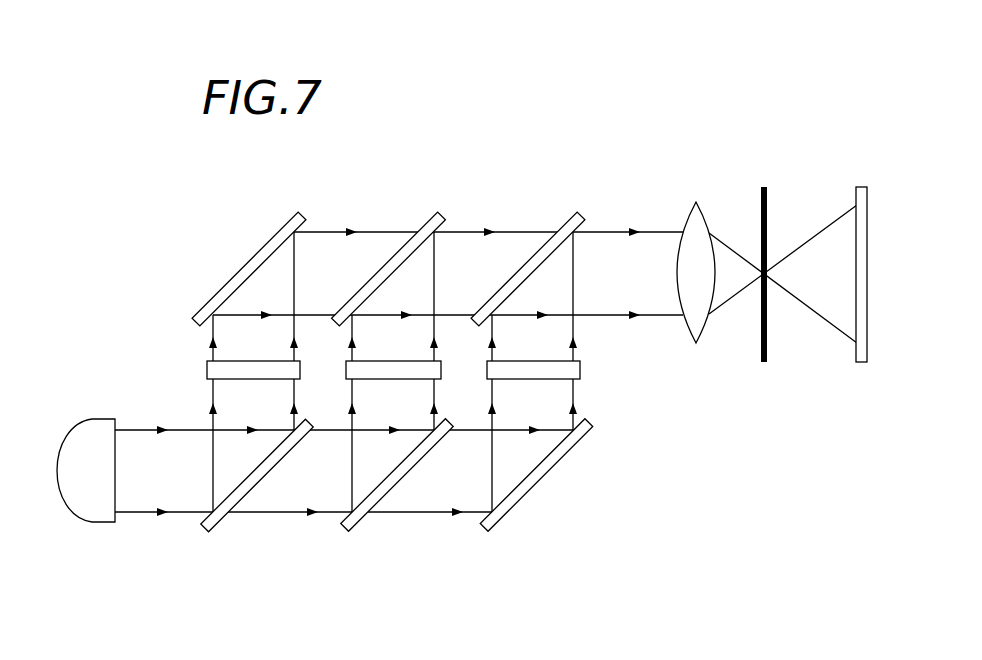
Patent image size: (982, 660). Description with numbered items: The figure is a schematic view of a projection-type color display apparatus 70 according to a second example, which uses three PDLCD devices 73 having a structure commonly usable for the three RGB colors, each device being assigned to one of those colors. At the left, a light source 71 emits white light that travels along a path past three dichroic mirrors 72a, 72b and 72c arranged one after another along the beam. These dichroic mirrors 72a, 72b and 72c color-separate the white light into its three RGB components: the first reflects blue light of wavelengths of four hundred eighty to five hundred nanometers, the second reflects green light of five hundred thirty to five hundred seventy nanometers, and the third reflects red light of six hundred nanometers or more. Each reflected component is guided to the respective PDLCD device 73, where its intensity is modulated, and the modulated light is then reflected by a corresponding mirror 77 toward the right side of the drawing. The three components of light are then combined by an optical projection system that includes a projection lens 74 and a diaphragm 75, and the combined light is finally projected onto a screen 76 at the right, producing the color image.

The projection-type color display apparatus 70 is at (698, 42).
The light source 71 is at (95, 420).
The dichroic mirror 72a is at (215, 531).
The dichroic mirror 72b is at (353, 532).
The dichroic mirror 72c is at (488, 533).
The PDLCD device 73 is at (207, 370).
The projection lens 74 is at (696, 202).
The diaphragm 75 is at (764, 186).
The screen 76 is at (861, 186).
The mirror 77 is at (303, 213).